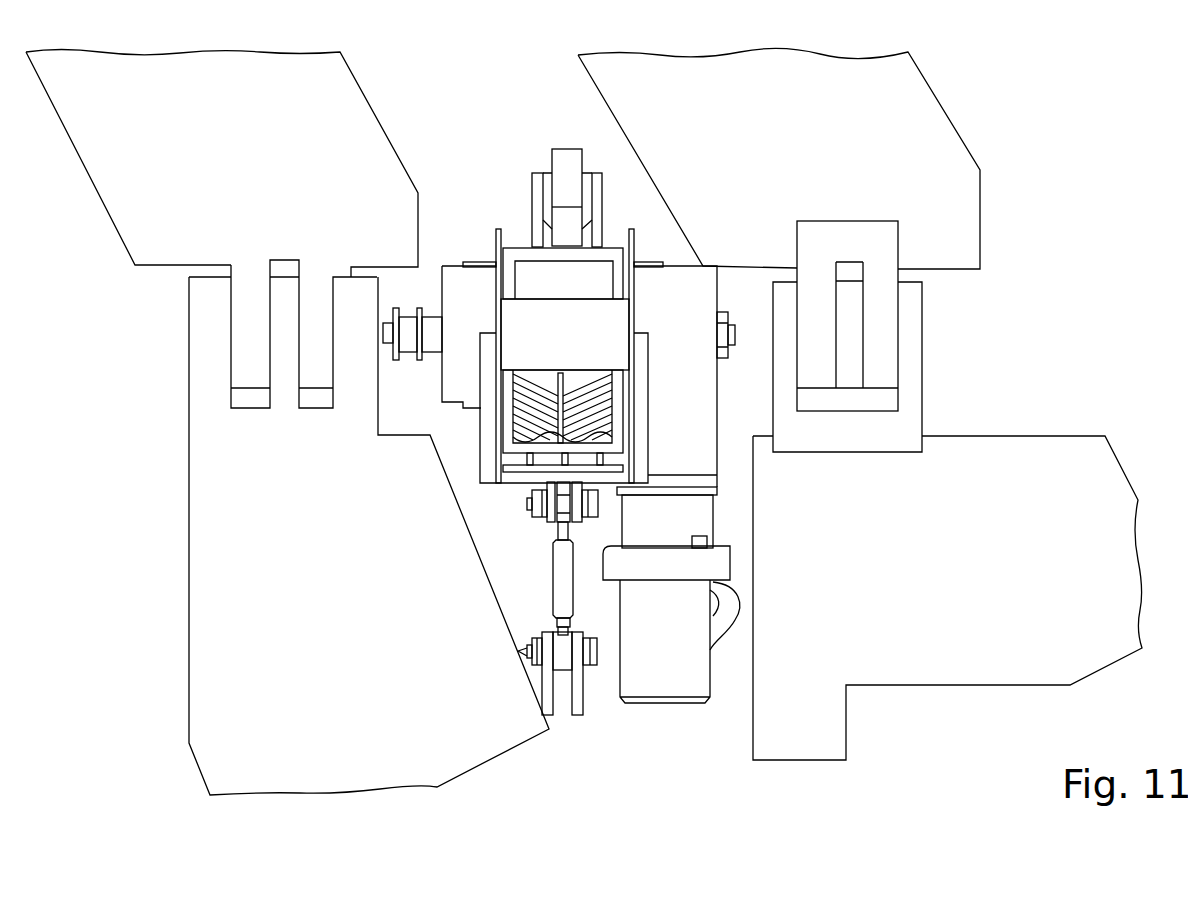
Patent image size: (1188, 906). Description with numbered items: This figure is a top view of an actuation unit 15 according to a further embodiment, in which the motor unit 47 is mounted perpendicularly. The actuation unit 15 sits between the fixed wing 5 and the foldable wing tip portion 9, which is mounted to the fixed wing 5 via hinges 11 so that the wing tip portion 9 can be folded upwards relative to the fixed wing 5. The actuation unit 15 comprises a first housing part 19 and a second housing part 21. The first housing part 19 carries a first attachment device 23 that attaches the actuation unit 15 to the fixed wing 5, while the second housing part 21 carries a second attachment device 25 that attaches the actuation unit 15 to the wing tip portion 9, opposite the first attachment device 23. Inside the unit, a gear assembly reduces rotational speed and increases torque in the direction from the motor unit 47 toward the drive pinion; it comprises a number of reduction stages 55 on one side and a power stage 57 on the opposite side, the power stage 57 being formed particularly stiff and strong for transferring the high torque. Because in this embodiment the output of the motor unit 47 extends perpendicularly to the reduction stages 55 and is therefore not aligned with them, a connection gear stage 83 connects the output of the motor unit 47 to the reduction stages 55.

The fixed wing 5 is at (782, 737).
The foldable wing tip portion 9 is at (343, 78).
The hinges 11 is at (203, 346).
The actuation unit 15 is at (448, 144).
The first housing part 19 is at (488, 416).
The second housing part 21 is at (523, 250).
The first attachment device 23 is at (560, 568).
The second attachment device 25 is at (568, 162).
The motor unit 47 is at (652, 651).
The reduction stages 55 is at (655, 283).
The power stage 57 is at (473, 282).
The connection gear stage 83 is at (700, 458).